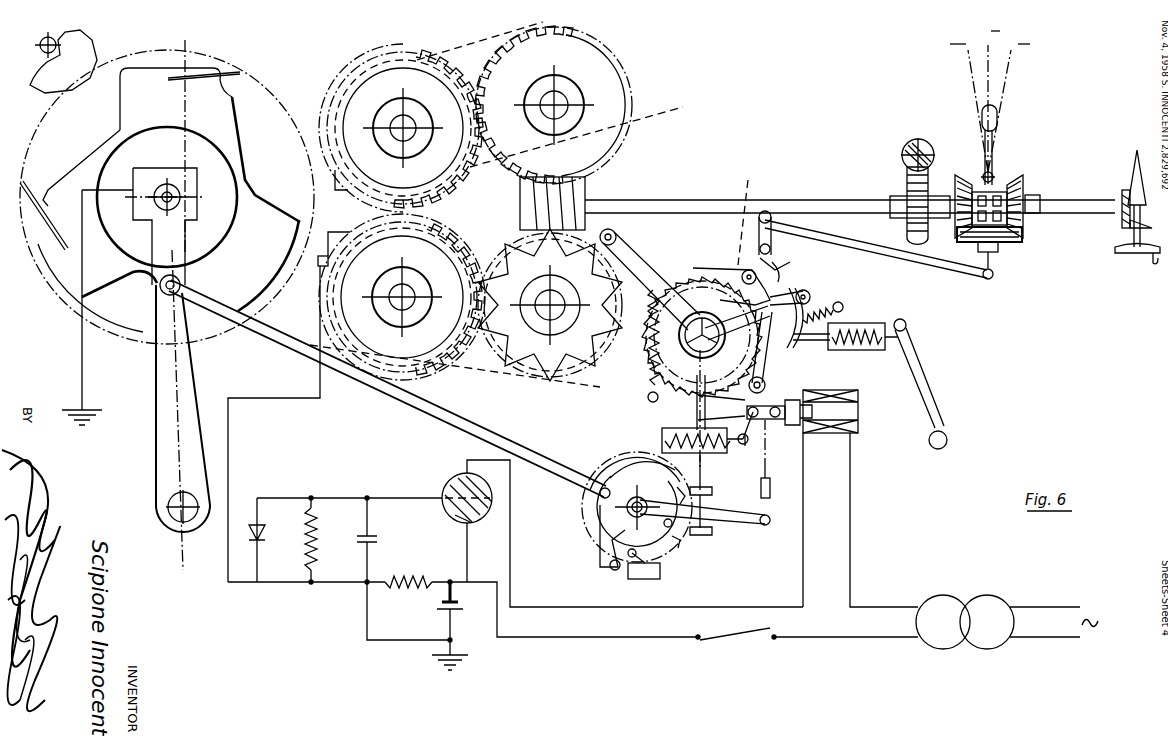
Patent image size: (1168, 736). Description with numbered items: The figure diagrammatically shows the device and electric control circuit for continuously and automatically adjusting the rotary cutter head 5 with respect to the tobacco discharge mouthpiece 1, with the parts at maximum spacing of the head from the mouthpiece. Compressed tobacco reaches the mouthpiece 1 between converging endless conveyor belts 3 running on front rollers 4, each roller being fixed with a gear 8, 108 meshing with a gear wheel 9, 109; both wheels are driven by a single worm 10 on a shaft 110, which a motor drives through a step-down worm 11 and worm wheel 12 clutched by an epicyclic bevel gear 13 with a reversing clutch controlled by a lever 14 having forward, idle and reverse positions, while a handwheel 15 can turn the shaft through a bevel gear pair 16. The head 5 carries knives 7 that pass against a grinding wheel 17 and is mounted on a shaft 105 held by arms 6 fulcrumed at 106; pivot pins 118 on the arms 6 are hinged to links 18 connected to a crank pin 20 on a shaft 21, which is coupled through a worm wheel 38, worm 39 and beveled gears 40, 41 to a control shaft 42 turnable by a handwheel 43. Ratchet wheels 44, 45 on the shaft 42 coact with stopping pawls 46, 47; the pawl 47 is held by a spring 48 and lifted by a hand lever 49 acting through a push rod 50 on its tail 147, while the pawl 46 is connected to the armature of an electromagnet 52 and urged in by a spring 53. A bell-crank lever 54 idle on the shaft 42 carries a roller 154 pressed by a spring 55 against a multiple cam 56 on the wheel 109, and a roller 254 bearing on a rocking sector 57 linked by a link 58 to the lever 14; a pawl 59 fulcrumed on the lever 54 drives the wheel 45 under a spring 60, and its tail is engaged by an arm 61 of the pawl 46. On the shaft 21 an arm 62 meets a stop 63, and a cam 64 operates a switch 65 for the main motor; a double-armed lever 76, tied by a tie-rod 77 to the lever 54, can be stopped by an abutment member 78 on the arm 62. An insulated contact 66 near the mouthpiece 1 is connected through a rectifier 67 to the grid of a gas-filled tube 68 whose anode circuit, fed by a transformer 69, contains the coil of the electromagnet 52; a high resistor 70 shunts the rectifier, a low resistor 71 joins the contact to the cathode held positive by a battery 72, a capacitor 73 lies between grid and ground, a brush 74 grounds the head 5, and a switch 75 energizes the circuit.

The tobacco discharge mouthpiece 1 is at (345, 190).
The converging endless conveyor belts 3 is at (660, 102).
The front rollers 4 is at (362, 82).
The rotary cutter head 5 is at (85, 168).
The arms 6 is at (158, 433).
The knives 7 is at (240, 72).
The gear 8 is at (340, 96).
The gear wheel 9 is at (618, 62).
The worm 10 is at (520, 192).
The step-down worm 11 is at (905, 148).
The worm wheel 12 is at (907, 184).
The epicyclic bevel gear 13 is at (1014, 242).
The lever 14 is at (995, 160).
The handwheel 15 is at (1125, 255).
The bevel gear pair 16 is at (1137, 196).
The grinding wheel 17 is at (90, 44).
The links 18 is at (412, 402).
The crank pin 20 is at (598, 494).
The shaft 21 is at (628, 510).
The worm wheel 38 is at (590, 472).
The worm 39 is at (712, 530).
The beveled gear 40 is at (648, 395).
The beveled gear 41 is at (750, 180).
The control shaft 42 is at (665, 335).
The handwheel 43 is at (697, 318).
The ratchet wheel 44 is at (690, 365).
The ratchet wheel 45 is at (718, 268).
The stopping pawl 46 is at (705, 403).
The stopping pawl 47 is at (722, 265).
The spring 48 is at (836, 304).
The hand lever 49 is at (940, 394).
The push rod 50 is at (868, 350).
The electromagnet 52 is at (858, 430).
The spring 53 is at (728, 453).
The bell-crank lever 54 is at (665, 254).
The spring 55 is at (650, 365).
The multiple cam 56 is at (560, 385).
The rocking sector 57 is at (778, 260).
The link 58 is at (940, 268).
The pawl 59 is at (793, 346).
The spring 60 is at (783, 268).
The arm 61 is at (768, 365).
The arm 62 is at (598, 560).
The stop 63 is at (614, 570).
The cam 64 is at (640, 465).
The switch 65 is at (660, 575).
The insulated contact 66 is at (318, 266).
The current rectifier 67 is at (262, 530).
The gas-filled electronic tube 68 is at (443, 480).
The transformer 69 is at (950, 595).
The resistor 70 is at (318, 538).
The resistor 71 is at (412, 575).
The battery 72 is at (440, 608).
The capacitor 73 is at (378, 533).
The brush 74 is at (152, 190).
The switch 75 is at (748, 640).
The double-armed lever 76 is at (750, 520).
The tie-rod 77 is at (770, 480).
The abutment member 78 is at (672, 527).
The shaft 105 is at (180, 200).
The fulcrum 106 is at (168, 512).
The gear 108 is at (445, 240).
The gear wheel 109 is at (540, 375).
The shaft 110 is at (820, 198).
The pivot pins 118 is at (165, 292).
The tail 147 is at (830, 341).
The roller 154 is at (612, 230).
The roller 254 is at (808, 292).